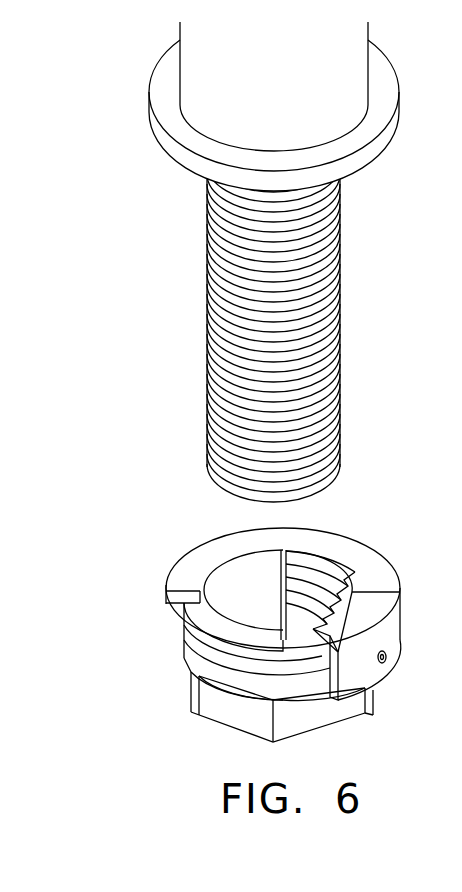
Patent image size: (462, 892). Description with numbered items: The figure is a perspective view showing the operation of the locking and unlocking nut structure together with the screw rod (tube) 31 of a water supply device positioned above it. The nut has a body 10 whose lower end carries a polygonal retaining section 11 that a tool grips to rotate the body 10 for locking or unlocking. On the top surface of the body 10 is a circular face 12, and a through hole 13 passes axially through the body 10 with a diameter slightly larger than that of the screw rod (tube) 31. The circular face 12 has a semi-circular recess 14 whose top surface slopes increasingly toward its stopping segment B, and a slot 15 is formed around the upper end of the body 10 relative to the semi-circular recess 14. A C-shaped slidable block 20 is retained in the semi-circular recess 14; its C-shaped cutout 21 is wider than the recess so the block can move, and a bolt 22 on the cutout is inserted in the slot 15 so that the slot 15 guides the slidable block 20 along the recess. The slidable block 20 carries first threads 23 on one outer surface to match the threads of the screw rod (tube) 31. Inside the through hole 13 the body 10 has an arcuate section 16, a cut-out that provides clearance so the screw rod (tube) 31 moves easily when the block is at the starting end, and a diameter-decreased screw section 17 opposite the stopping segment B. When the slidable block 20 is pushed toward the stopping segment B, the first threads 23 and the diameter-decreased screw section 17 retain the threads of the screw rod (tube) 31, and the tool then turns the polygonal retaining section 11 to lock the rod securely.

The body 10 is at (270, 627).
The polygonal retaining section 11 is at (310, 725).
The circular face 12 is at (186, 574).
The through hole 13 is at (262, 648).
The semi-circular recess 14 is at (198, 625).
The slot 15 is at (283, 672).
The arcuate section 16 is at (230, 568).
The diameter-decreased screw section 17 is at (355, 575).
The slidable block 20 is at (395, 634).
The C-shaped cutout 21 is at (318, 678).
The bolt 22 is at (387, 664).
The first threads 23 is at (300, 605).
The screw rod (tube) 31 is at (342, 293).
The stopping segment B is at (193, 612).